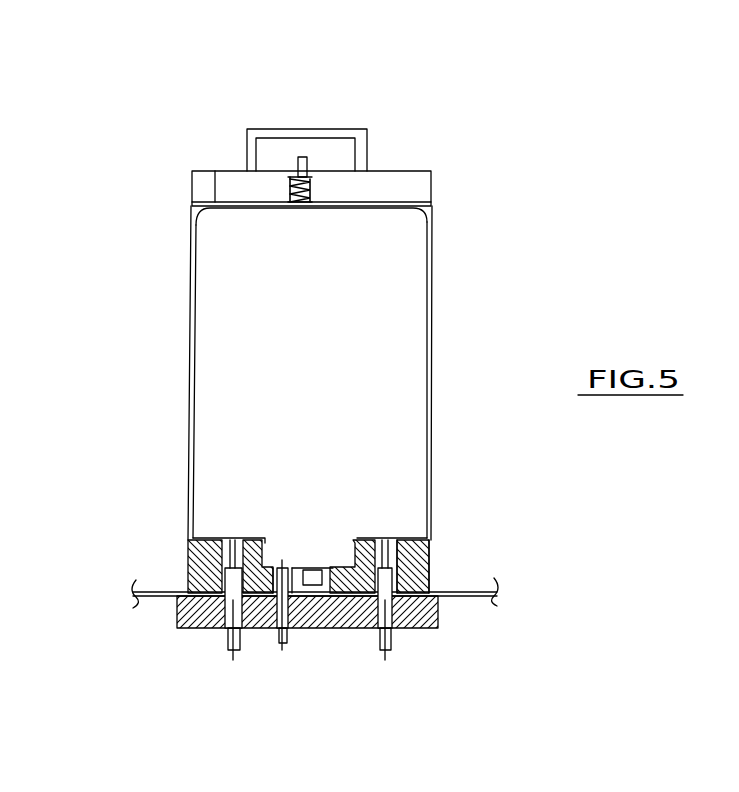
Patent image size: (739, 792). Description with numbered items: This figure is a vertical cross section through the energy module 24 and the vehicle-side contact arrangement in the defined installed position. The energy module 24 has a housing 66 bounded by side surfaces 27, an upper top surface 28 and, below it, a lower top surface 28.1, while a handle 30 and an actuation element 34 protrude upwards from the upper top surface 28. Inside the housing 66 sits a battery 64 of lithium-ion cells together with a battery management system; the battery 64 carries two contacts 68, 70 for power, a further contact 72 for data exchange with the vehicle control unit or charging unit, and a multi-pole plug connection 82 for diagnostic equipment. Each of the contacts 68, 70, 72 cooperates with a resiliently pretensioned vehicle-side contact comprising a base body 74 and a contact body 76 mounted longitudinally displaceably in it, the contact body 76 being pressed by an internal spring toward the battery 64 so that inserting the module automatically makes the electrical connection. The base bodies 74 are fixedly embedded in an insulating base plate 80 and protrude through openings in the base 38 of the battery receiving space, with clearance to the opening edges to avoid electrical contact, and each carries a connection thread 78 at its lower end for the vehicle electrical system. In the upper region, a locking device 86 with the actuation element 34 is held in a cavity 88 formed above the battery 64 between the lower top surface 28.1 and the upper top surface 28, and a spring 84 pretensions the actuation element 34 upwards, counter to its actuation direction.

The energy module 24 is at (181, 279).
The side surfaces 27 is at (190, 353).
The upper top surface 28 is at (412, 171).
The lower top surface 28.1 is at (218, 203).
The handle 30 is at (300, 157).
The actuation element 34 is at (298, 157).
The base 38 is at (153, 592).
The battery 64 is at (397, 347).
The housing 66 is at (432, 205).
The contact 68 is at (232, 545).
The contact 70 is at (403, 537).
The further contact 72 is at (267, 620).
The base body 74 is at (227, 612).
The contact body 76 is at (224, 565).
The connection thread 78 is at (227, 643).
The insulating base plate 80 is at (443, 612).
The multi-pole plug connection 82 is at (352, 615).
The spring 84 is at (310, 186).
The locking device 86 is at (289, 178).
The cavity 88 is at (417, 190).